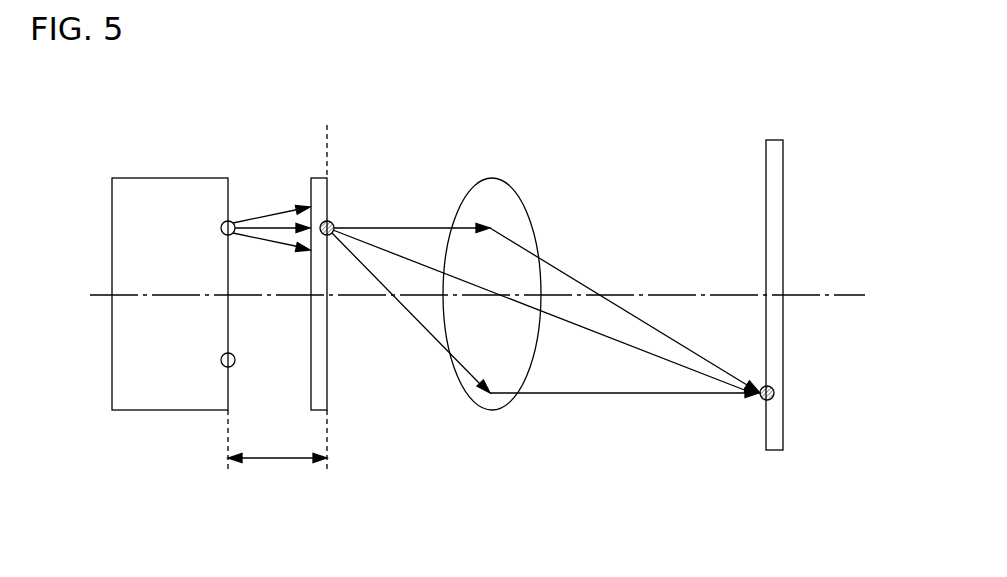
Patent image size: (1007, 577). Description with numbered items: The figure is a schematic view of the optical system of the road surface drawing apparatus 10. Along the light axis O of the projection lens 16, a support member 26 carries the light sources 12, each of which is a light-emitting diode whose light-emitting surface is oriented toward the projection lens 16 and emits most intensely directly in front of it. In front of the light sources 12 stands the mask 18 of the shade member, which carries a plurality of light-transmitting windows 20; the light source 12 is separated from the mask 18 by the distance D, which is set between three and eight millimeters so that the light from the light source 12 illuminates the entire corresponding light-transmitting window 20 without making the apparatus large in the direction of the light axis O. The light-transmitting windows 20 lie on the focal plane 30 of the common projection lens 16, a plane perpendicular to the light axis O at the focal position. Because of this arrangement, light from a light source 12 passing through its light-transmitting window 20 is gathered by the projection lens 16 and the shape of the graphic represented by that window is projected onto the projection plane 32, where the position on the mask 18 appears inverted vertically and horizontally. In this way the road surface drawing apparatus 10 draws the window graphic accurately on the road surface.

The road surface drawing apparatus 10 is at (453, 560).
The light source 12 is at (223, 223).
The projection lens 16 is at (492, 190).
The mask 18 is at (320, 178).
The light-transmitting window 20 is at (333, 223).
The support member 26 is at (145, 195).
The focal plane 30 is at (327, 467).
The projection plane 32 is at (777, 442).
The distance D is at (277, 446).
The light axis O is at (672, 293).